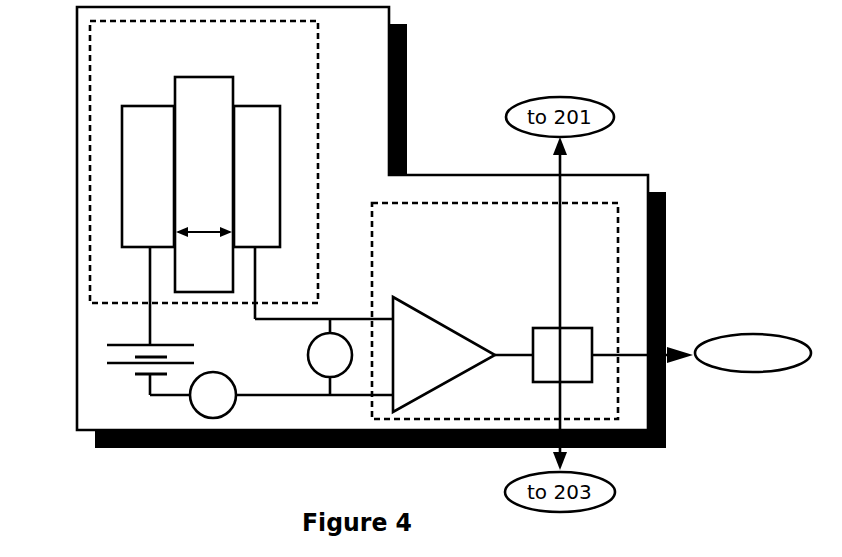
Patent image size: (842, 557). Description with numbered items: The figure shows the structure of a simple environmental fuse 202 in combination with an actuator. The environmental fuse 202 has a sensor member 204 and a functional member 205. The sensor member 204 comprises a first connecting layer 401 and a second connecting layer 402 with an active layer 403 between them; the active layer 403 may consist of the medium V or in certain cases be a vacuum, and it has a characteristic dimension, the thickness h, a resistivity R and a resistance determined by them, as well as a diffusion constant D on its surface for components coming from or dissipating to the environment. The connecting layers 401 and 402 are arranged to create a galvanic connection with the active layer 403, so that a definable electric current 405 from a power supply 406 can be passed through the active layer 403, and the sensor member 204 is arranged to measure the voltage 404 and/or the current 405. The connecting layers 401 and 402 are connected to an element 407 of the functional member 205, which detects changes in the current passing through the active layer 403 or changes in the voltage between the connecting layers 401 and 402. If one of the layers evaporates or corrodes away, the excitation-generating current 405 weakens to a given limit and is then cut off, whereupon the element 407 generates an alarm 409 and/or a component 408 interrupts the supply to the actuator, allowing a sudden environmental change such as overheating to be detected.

The environmental fuse 202 is at (77, 222).
The sensor member 204 is at (318, 160).
The functional member 205 is at (372, 233).
The first connecting layer 401 is at (148, 106).
The second connecting layer 402 is at (260, 106).
The active layer 403 is at (224, 54).
The voltage 404 is at (308, 355).
The current 405 is at (236, 389).
The power supply 406 is at (164, 345).
The element 407 is at (418, 311).
The component 408 is at (533, 328).
The alarm 409 is at (746, 334).